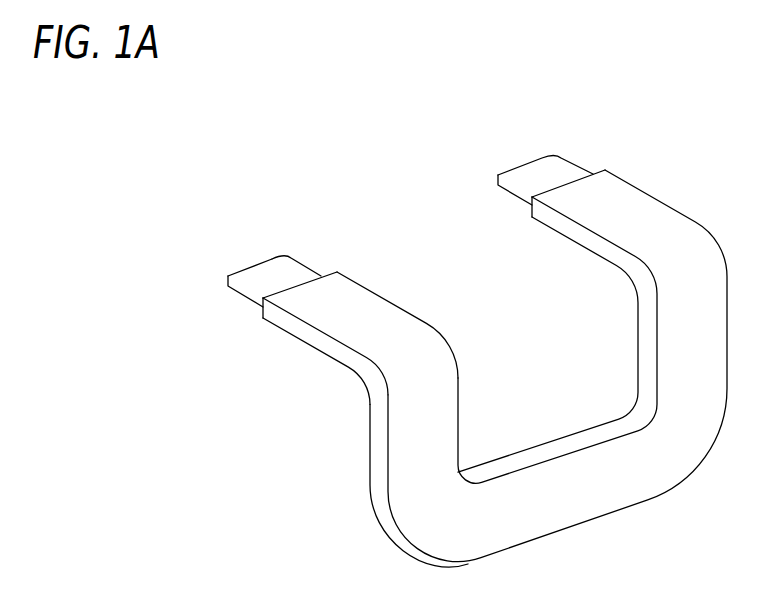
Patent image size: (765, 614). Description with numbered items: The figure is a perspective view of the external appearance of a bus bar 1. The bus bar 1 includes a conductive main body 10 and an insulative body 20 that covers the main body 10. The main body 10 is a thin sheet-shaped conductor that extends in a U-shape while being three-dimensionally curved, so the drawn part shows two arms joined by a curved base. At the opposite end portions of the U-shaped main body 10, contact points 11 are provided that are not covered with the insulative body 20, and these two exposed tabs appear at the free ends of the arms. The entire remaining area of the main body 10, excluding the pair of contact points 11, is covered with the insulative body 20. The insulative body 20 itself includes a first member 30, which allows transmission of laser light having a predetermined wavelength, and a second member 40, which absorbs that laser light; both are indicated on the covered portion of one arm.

The bus bar 1 is at (445, 324).
The main body 10 is at (230, 311).
The contact points 11 is at (260, 260).
The insulative body 20 is at (349, 373).
The first member 30 is at (348, 322).
The second member 40 is at (280, 322).